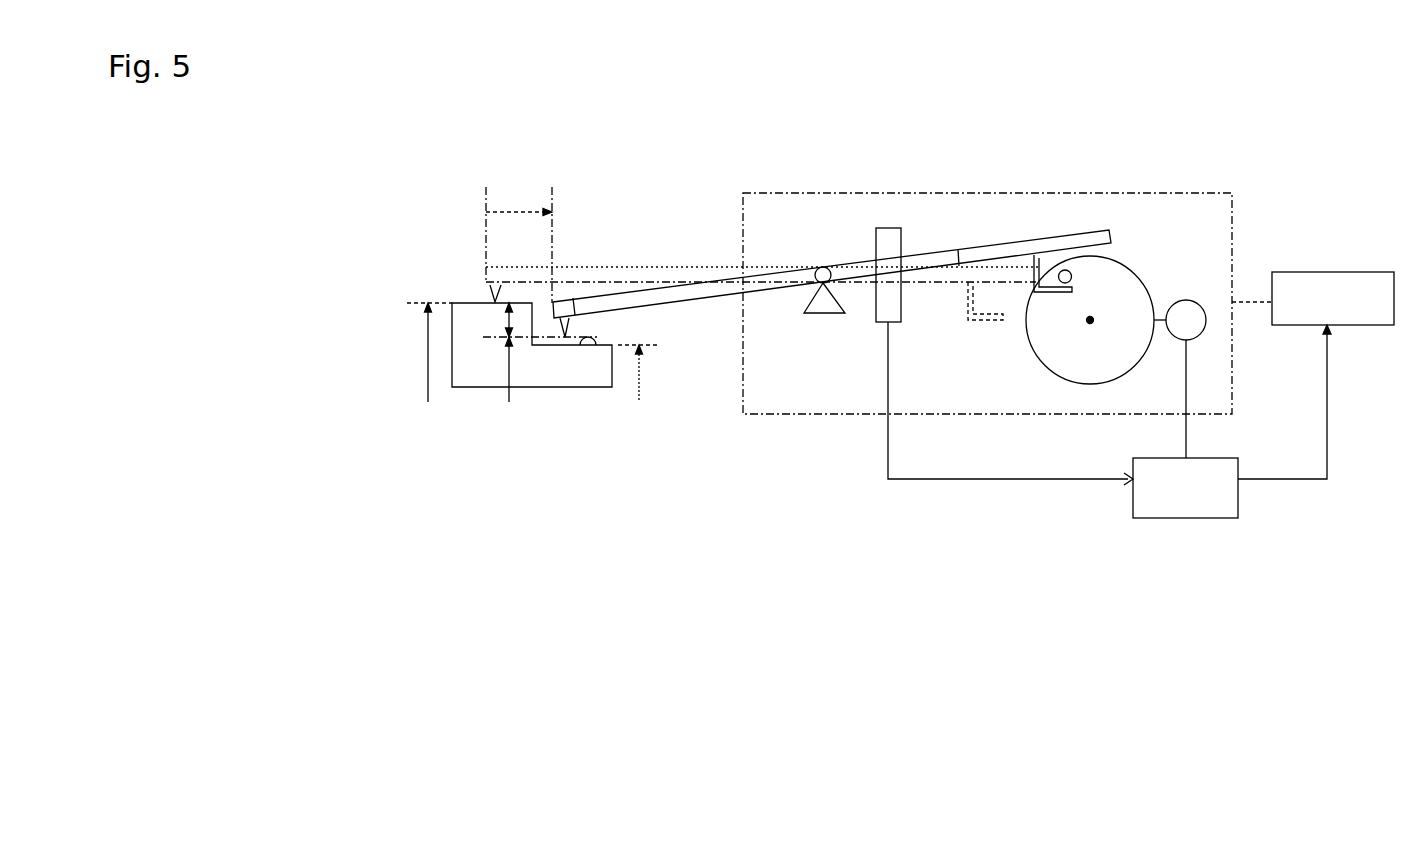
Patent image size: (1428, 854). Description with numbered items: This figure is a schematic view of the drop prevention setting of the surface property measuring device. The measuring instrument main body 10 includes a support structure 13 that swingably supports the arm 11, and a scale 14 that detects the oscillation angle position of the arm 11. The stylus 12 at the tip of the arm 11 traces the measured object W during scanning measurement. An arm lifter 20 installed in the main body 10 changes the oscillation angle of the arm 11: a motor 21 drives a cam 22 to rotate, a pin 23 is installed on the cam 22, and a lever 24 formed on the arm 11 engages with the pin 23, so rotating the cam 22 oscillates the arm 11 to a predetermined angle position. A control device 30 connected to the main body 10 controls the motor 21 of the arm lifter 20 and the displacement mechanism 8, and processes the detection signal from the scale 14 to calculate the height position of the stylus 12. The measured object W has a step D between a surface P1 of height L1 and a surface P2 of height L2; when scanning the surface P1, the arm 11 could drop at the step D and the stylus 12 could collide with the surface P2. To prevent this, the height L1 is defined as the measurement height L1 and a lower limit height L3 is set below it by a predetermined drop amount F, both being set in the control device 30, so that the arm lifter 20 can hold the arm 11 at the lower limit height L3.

The displacement mechanism 8 is at (1353, 270).
The measuring instrument main body 10 is at (1185, 192).
The arm 11 is at (632, 267).
The stylus 12 is at (569, 323).
The support structure 13 is at (817, 300).
The scale 14 is at (892, 293).
The arm lifter 20 is at (1083, 218).
The motor 21 is at (1203, 305).
The cam 22 is at (1125, 298).
The pin 23 is at (1072, 274).
The lever 24 is at (1049, 290).
The control device 30 is at (1128, 492).
The measured object W is at (457, 303).
The surface P1 is at (482, 302).
The surface P2 is at (590, 352).
The step D is at (533, 332).
The drop amount F is at (540, 320).
The measurement height L1 is at (427, 352).
The height L2 is at (644, 373).
The lower limit height L3 is at (496, 369).